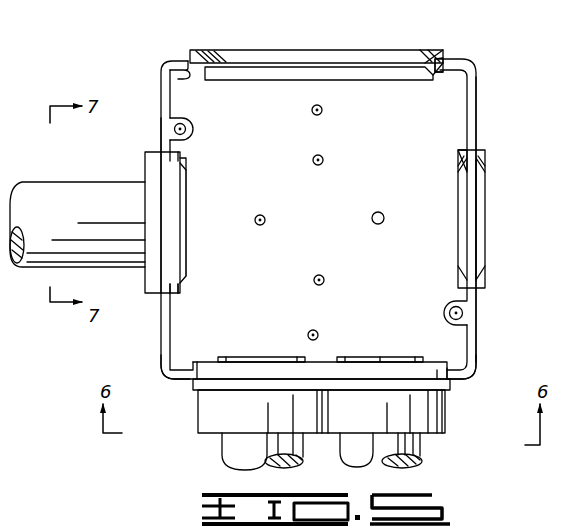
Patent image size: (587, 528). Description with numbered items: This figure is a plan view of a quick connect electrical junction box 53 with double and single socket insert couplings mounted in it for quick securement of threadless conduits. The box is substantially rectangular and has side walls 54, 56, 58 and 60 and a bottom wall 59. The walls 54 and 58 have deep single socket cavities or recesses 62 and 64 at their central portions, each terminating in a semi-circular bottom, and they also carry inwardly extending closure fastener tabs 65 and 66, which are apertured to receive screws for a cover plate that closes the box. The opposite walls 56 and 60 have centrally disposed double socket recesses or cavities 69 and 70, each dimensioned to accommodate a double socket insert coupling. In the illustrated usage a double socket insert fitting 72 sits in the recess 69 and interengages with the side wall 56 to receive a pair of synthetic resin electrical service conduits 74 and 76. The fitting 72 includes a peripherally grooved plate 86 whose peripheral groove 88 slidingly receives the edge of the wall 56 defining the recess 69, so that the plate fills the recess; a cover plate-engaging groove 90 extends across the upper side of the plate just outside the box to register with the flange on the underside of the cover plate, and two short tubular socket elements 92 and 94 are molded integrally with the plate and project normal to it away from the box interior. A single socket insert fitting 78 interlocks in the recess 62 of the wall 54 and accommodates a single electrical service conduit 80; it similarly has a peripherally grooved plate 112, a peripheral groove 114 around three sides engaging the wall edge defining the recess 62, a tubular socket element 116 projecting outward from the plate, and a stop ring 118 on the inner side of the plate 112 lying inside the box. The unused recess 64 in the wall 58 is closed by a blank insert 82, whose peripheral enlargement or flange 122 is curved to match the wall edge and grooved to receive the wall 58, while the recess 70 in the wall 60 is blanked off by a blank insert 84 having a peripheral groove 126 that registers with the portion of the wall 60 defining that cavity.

The quick connect electrical junction box 53 is at (480, 353).
The side wall 54 is at (161, 81).
The side wall 56 is at (183, 377).
The side wall 58 is at (478, 105).
The bottom wall 59 is at (291, 269).
The side wall 60 is at (172, 60).
The single socket cavity or recess 62 is at (172, 283).
The single socket cavity or recess 64 is at (461, 172).
The closure fastener tab 65 is at (190, 120).
The closure fastener tab 66 is at (451, 305).
The double socket recess or cavity 69 is at (437, 372).
The double socket recess or cavity 70 is at (420, 56).
The double socket insert fitting 72 is at (448, 413).
The electrical service conduit 74 is at (232, 450).
The electrical service conduit 76 is at (405, 443).
The single socket insert fitting 78 is at (186, 163).
The electrical service conduit 80 is at (58, 192).
The blank insert 82 is at (486, 208).
The blank insert 84 is at (248, 50).
The peripherally grooved plate 86 is at (320, 370).
The peripheral groove 88 is at (197, 361).
The cover plate-engaging groove 90 is at (436, 385).
The tubular socket element 92 is at (257, 421).
The tubular socket element 94 is at (386, 421).
The peripherally grooved plate 112 is at (167, 240).
The peripheral groove 114 is at (161, 140).
The tubular socket element 116 is at (150, 284).
The stop ring 118 is at (185, 196).
The peripheral enlargement or flange 122 is at (480, 252).
The peripheral groove 126 is at (186, 73).